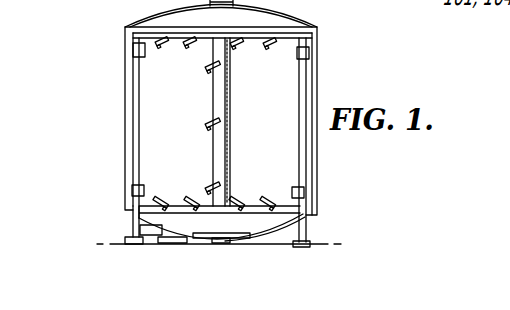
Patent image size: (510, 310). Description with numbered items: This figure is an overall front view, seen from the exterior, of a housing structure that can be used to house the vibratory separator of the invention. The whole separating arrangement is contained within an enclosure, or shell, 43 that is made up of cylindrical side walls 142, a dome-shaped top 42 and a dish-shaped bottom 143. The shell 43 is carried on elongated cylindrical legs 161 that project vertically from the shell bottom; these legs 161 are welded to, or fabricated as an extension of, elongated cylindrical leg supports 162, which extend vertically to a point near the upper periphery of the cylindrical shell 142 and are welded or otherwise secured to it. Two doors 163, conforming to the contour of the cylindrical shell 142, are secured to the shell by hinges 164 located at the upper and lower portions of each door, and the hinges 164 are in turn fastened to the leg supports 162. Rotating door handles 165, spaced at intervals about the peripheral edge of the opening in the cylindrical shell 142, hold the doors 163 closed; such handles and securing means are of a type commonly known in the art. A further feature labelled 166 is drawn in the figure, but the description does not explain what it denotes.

The dome-shaped top 42 is at (281, 18).
The enclosure 43 is at (140, 19).
The cylindrical side walls 142 is at (123, 140).
The dish-shaped bottom 143 is at (258, 226).
The elongated cylindrical legs 161 is at (333, 219).
The elongated cylindrical leg supports 162 is at (107, 92).
The doors 163 is at (333, 160).
The hinges 164 is at (337, 190).
The rotating door handles 165 is at (217, 64).
The lower blades 166 is at (270, 203).